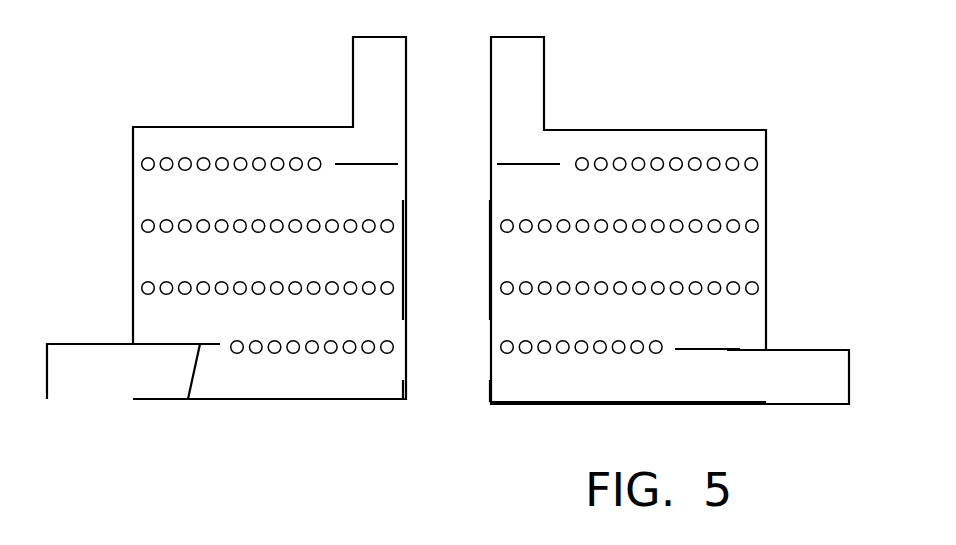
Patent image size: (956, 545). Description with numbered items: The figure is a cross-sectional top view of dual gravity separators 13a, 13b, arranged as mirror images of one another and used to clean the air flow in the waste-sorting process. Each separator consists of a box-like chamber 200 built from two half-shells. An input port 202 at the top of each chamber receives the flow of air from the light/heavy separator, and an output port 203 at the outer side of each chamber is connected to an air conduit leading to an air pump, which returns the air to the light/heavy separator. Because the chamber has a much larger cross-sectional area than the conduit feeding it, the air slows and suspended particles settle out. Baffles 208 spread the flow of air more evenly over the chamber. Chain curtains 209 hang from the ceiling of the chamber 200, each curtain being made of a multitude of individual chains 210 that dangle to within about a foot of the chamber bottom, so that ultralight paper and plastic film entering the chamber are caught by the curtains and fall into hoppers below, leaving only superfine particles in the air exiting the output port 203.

The gravity separator 13a is at (613, 120).
The gravity separator 13b is at (245, 119).
The chamber 200 is at (404, 393).
The input port 202 is at (515, 36).
The output port 203 is at (46, 366).
The baffles 208 is at (533, 164).
The chain curtains 209 is at (526, 232).
The chains 210 is at (293, 353).